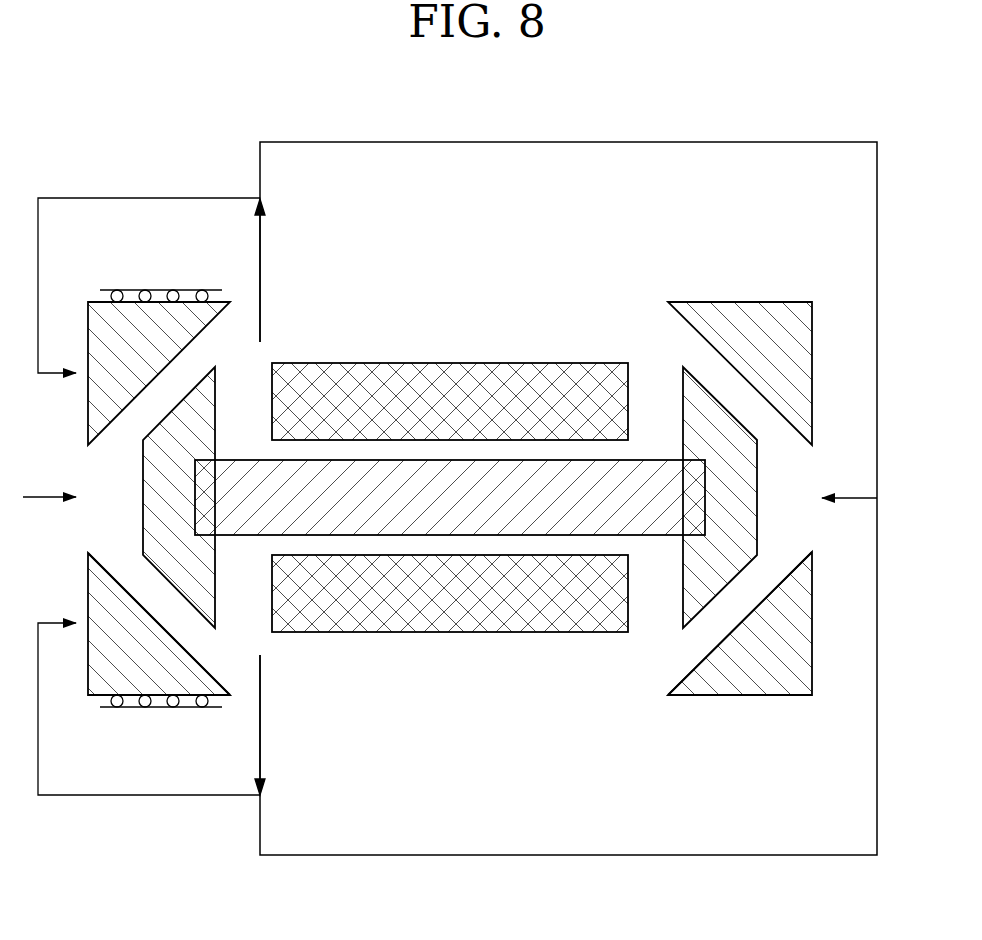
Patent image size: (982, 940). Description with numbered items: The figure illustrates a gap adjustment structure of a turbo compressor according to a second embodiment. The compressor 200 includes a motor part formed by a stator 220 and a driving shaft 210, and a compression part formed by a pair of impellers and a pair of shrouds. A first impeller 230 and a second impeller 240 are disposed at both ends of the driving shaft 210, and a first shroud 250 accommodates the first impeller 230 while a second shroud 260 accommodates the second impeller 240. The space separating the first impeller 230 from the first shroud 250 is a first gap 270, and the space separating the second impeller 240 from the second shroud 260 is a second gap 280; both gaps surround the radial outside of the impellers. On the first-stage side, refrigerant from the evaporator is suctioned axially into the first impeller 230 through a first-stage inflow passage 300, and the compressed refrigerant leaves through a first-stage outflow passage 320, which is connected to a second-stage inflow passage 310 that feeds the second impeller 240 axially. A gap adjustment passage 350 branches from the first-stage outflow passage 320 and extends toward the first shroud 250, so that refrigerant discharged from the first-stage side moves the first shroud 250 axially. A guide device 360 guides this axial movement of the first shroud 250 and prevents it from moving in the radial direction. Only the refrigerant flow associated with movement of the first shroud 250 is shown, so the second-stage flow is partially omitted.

The compressor 200 is at (86, 110).
The driving shaft 210 is at (243, 472).
The stator 220 is at (439, 387).
The first impeller 230 is at (155, 524).
The second impeller 240 is at (740, 526).
The first shroud 250 is at (98, 315).
The second shroud 260 is at (759, 325).
The first gap 270 is at (172, 618).
The second gap 280 is at (734, 600).
The first-stage inflow passage 300 is at (47, 497).
The second-stage inflow passage 310 is at (565, 142).
The first-stage outflow passage 320 is at (262, 250).
The gap adjustment passage 350 is at (148, 198).
The guide device 360 is at (158, 290).